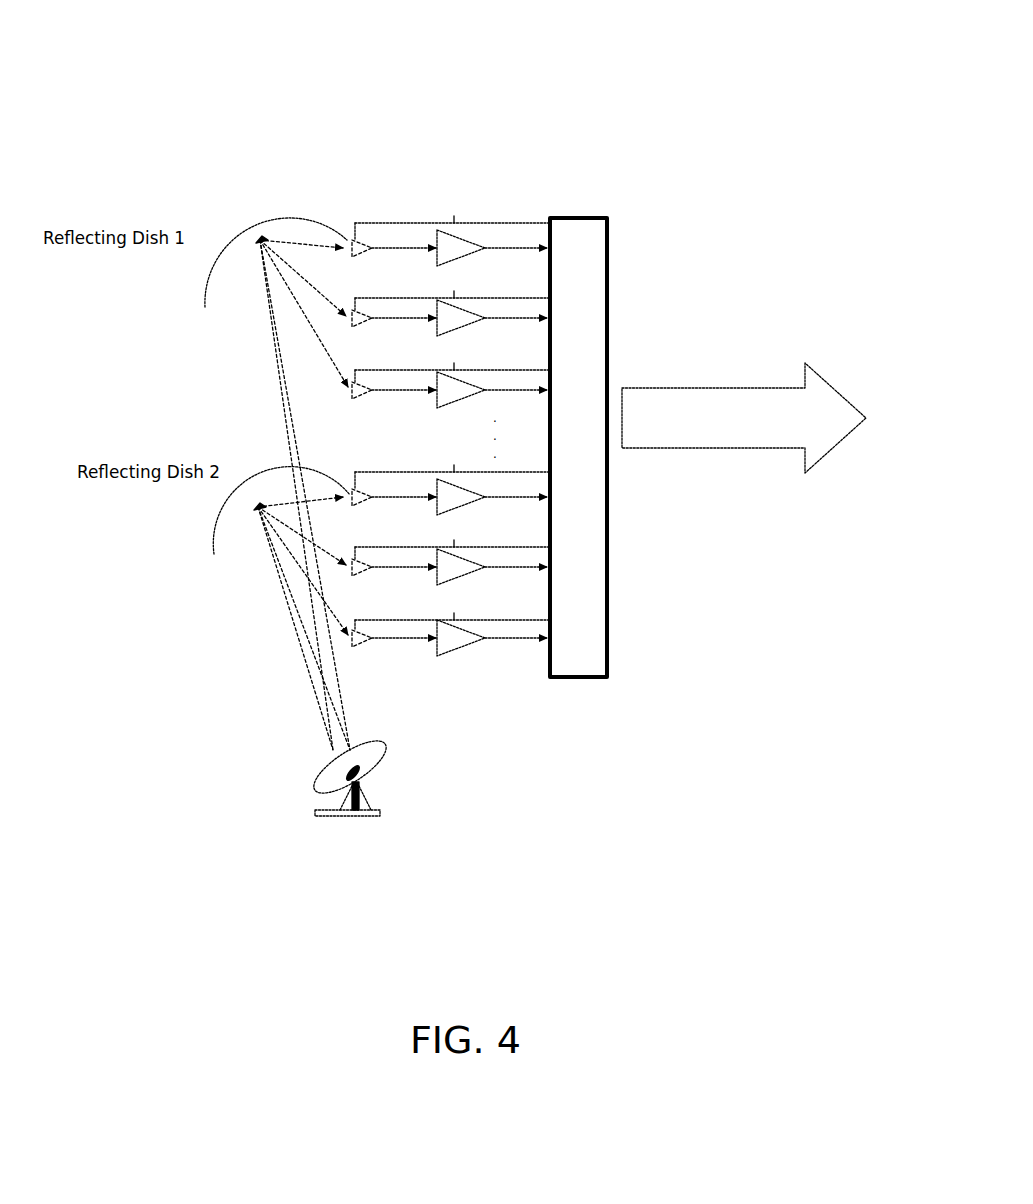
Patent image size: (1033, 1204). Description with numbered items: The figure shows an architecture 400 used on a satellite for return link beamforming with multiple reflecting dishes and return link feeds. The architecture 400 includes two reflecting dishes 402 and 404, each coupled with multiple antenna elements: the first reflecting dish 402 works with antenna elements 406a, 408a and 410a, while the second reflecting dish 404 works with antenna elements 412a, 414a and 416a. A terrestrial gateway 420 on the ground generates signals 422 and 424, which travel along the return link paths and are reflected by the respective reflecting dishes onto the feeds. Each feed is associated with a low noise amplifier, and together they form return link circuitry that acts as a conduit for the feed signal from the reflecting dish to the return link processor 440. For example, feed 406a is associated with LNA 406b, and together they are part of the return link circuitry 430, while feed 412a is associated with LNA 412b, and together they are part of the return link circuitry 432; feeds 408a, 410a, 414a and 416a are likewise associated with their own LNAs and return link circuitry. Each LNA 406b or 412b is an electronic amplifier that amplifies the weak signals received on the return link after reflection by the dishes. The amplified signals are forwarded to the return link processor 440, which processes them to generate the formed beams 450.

The architecture 400 is at (51, 56).
The reflecting dish 402 is at (265, 222).
The reflecting dish 404 is at (215, 548).
The antenna element 406a is at (367, 243).
The low noise amplifier 406b is at (437, 232).
The antenna element 408a is at (366, 312).
The antenna element 410a is at (366, 385).
The antenna element 412a is at (366, 490).
The low noise amplifier 412b is at (450, 482).
The antenna element 414a is at (366, 562).
The antenna element 416a is at (366, 632).
The terrestrial gateway 420 is at (365, 773).
The signal 422 is at (329, 632).
The signal 424 is at (317, 697).
The return link circuitry 430 is at (455, 208).
The return link circuitry 432 is at (463, 462).
The return link processor 440 is at (607, 225).
The formed beams 450 is at (822, 380).